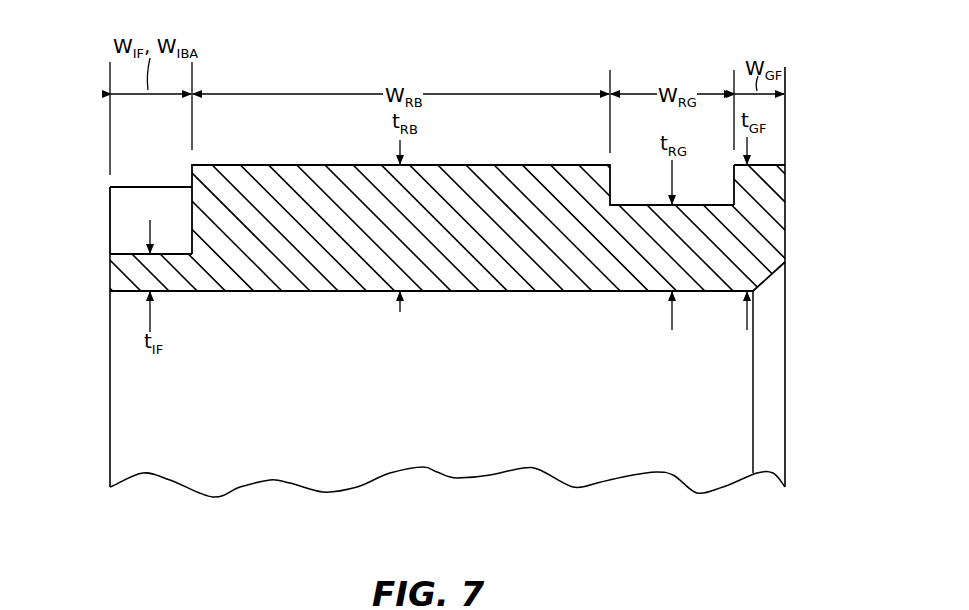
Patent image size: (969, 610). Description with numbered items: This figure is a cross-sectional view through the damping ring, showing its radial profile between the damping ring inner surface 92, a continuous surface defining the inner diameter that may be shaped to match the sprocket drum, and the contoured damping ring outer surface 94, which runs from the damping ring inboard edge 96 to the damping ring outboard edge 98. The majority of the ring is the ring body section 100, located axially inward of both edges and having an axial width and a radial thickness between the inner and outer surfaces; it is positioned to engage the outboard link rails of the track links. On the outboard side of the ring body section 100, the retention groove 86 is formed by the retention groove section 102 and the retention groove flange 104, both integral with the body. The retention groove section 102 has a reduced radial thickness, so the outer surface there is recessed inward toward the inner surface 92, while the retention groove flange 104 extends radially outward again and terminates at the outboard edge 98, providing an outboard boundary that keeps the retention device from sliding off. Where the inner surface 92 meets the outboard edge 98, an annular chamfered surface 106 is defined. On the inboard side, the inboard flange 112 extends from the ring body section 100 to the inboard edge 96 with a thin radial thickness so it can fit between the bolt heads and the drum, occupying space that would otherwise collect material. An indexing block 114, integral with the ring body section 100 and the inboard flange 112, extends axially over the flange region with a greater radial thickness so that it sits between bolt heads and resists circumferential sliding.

The retention groove 86 is at (704, 183).
The damping ring inner surface 92 is at (270, 293).
The damping ring outer surface 94 is at (222, 164).
The damping ring inboard edge 96 is at (110, 280).
The damping ring outboard edge 98 is at (787, 228).
The ring body section 100 is at (518, 177).
The retention groove section 102 is at (703, 280).
The retention groove flange 104 is at (763, 180).
The annular chamfered surface 106 is at (768, 291).
The inboard flange 112 is at (125, 263).
The indexing block 114 is at (120, 213).